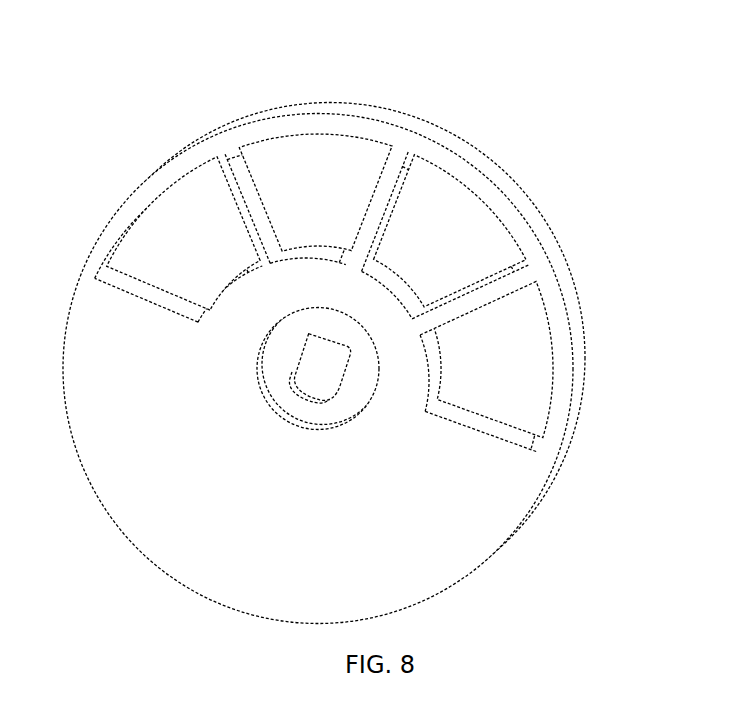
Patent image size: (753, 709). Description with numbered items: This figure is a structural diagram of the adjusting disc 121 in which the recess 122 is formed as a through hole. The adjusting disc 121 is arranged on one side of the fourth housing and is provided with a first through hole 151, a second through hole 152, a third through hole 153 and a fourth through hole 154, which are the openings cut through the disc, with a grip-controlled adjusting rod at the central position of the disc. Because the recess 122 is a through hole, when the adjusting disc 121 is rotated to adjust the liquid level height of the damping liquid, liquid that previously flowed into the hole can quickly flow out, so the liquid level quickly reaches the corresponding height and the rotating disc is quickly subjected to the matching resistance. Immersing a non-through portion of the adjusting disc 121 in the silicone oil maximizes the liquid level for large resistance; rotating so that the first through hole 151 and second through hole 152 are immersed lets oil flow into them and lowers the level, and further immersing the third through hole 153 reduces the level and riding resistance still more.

The adjusting disc 121 is at (163, 485).
The recess 122 is at (637, 33).
The first through hole 151 is at (189, 190).
The second through hole 152 is at (348, 161).
The third through hole 153 is at (477, 252).
The fourth through hole 154 is at (520, 378).